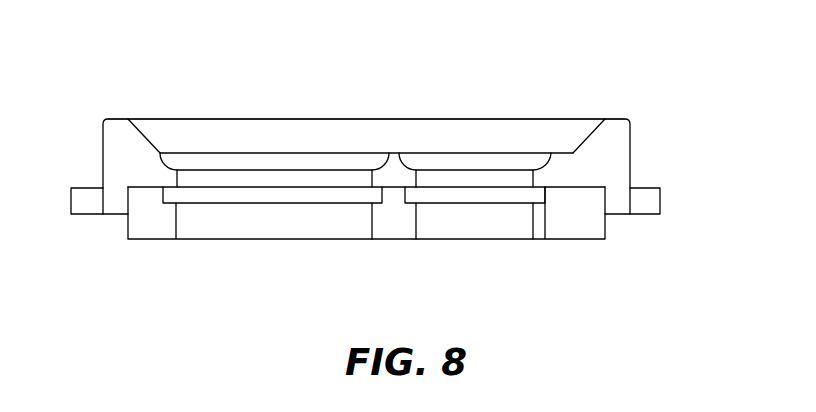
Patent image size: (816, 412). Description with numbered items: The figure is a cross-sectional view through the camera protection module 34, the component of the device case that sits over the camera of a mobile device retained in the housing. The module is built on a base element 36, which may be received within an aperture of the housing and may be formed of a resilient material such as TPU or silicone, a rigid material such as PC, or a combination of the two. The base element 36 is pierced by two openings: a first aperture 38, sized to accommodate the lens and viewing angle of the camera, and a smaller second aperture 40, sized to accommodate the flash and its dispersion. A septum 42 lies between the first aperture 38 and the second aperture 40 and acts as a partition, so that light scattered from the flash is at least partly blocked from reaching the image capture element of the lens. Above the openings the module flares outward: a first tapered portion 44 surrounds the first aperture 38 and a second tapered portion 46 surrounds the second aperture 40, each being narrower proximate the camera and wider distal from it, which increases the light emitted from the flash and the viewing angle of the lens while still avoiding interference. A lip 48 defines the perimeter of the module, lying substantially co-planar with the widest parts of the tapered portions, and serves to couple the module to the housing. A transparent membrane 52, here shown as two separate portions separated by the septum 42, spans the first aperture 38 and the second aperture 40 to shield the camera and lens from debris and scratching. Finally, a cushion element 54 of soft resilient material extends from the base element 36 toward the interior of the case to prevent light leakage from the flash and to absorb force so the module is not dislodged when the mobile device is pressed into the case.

The camera protection module 34 is at (320, 68).
The base element 36 is at (615, 153).
The first aperture 38 is at (278, 218).
The second aperture 40 is at (493, 242).
The septum 42 is at (400, 210).
The first tapered portion 44 is at (122, 117).
The second tapered portion 46 is at (566, 153).
The lip 48 is at (86, 202).
The membrane 52 is at (207, 197).
The cushion element 54 is at (597, 227).